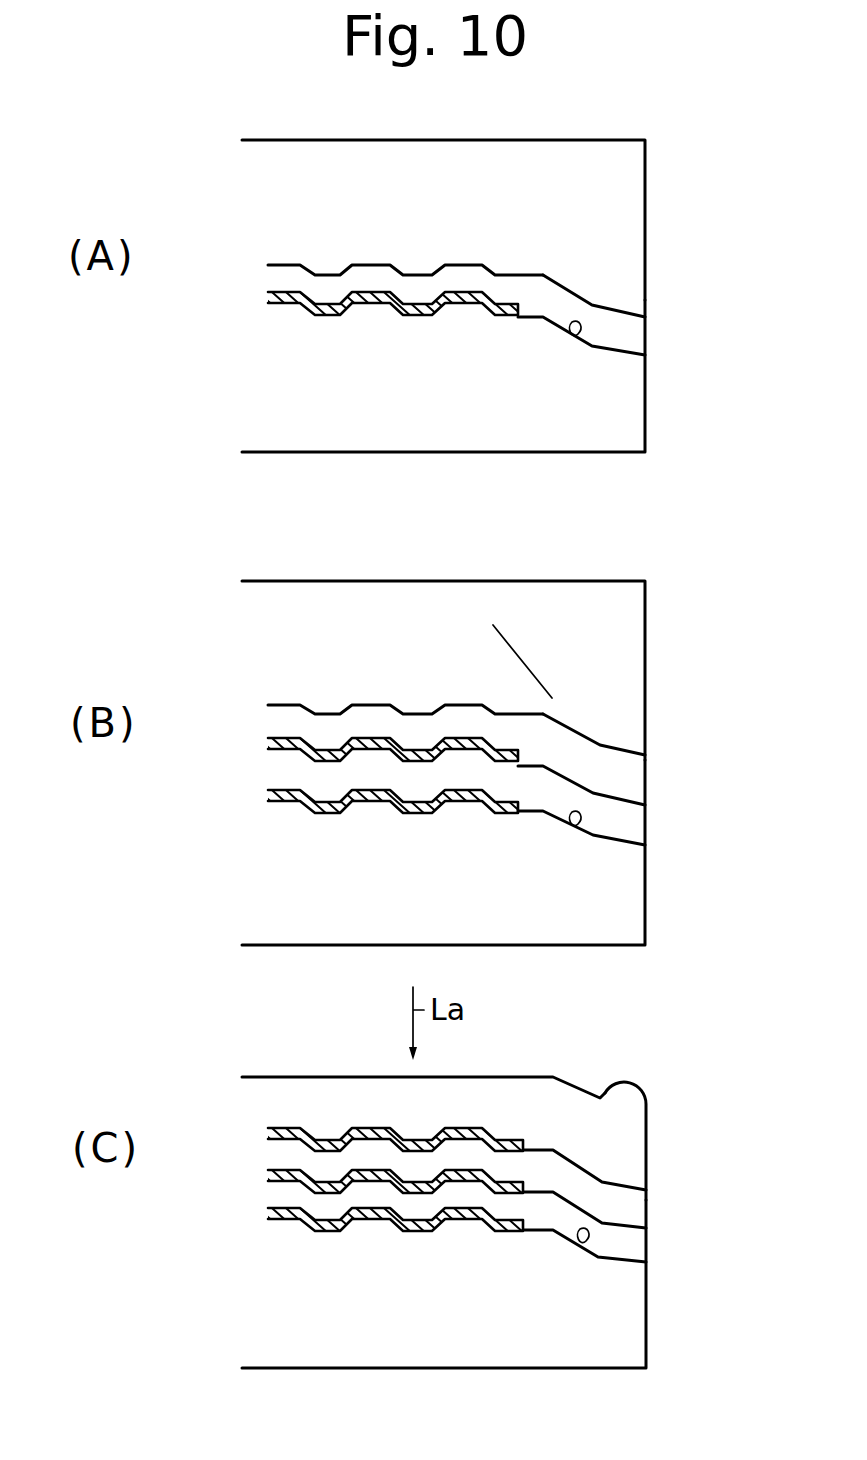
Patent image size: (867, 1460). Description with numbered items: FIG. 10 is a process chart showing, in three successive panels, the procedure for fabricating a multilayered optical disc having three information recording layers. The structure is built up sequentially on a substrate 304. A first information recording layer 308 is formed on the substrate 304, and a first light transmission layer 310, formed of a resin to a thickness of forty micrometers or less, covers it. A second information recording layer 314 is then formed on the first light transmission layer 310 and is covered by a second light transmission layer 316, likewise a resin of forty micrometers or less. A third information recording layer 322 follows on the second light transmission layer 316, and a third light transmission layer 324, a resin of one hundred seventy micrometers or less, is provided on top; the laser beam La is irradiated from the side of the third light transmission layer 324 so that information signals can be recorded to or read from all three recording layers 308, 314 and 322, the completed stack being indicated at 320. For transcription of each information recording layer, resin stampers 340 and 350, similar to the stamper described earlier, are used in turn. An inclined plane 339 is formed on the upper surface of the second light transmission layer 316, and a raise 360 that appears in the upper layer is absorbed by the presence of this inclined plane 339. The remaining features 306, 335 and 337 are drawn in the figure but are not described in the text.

The substrate 304 is at (606, 425).
The insulating layer 306 is at (505, 316).
The first information recording layer 308 is at (468, 293).
The first light transmission layer 310 is at (622, 334).
The second information recording layer 314 is at (425, 750).
The second light transmission layer 316 is at (622, 782).
The laminated structure 320 is at (378, 1127).
The third information recording layer 322 is at (290, 1128).
The third light transmission layer 324 is at (620, 1146).
The protrusion 335 is at (578, 335).
The layer 337 is at (590, 302).
The inclined plane 339 is at (578, 733).
The resin stamper 340 is at (622, 245).
The resin stamper 350 is at (622, 700).
The raise 360 is at (628, 1097).